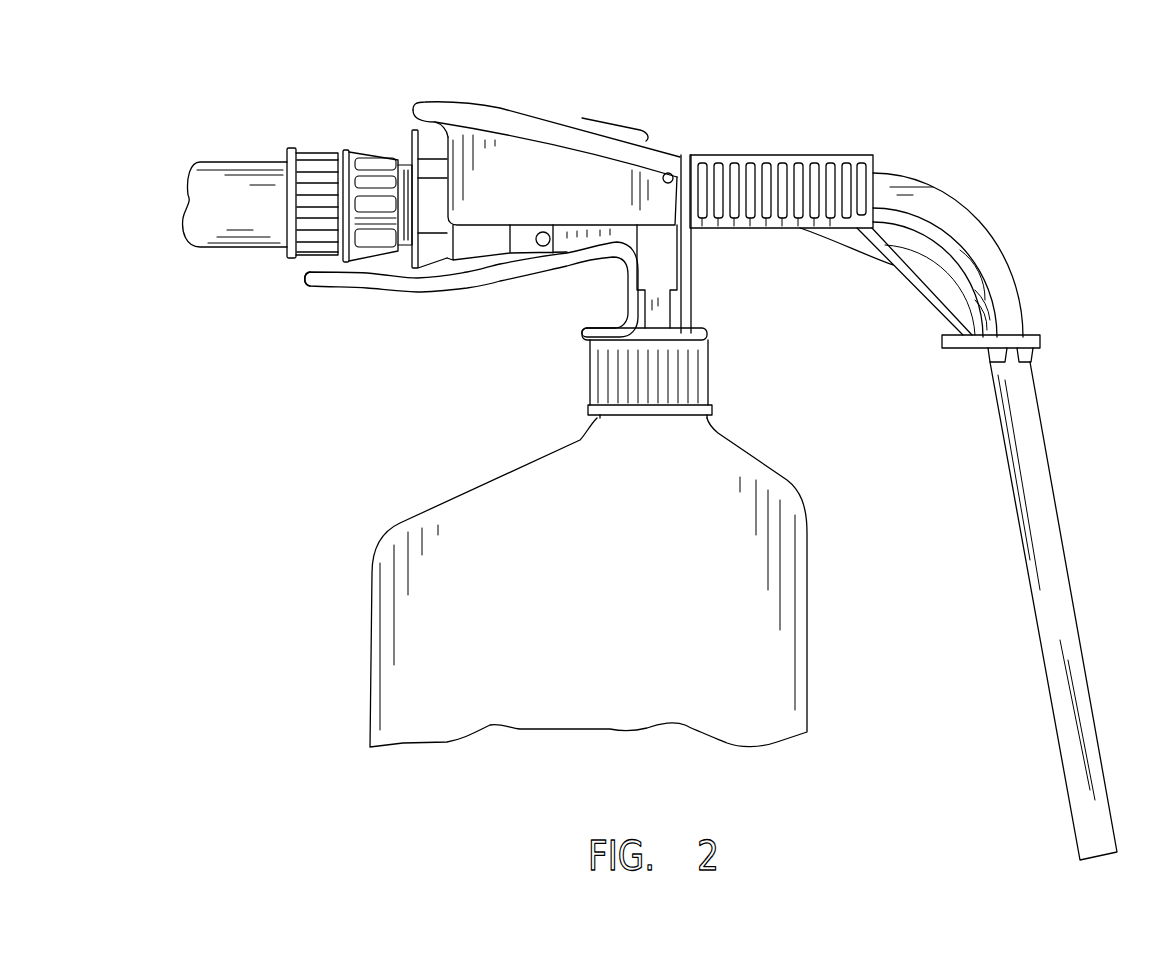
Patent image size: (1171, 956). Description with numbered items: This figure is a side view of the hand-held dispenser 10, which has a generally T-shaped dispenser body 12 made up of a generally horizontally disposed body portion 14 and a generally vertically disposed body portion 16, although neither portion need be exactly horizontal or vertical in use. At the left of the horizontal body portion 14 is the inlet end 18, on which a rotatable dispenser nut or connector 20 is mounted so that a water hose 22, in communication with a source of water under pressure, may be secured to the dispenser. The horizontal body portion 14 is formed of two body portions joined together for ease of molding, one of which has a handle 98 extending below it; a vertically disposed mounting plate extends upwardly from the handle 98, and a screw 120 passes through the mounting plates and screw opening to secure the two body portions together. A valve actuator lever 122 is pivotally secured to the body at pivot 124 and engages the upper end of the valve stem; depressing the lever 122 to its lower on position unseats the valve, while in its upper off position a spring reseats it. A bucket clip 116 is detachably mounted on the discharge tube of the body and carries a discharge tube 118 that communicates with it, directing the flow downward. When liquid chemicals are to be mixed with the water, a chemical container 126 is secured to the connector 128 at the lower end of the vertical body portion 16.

The hand-held dispenser 10 is at (622, 118).
The dispenser body 12 is at (477, 292).
The horizontally disposed body portion 14 is at (773, 152).
The vertically disposed body portion 16 is at (702, 299).
The inlet end 18 is at (400, 135).
The rotatable dispenser nut or connector 20 is at (367, 233).
The water hose 22 is at (240, 175).
The handle 98 is at (333, 280).
The bucket clip 116 is at (835, 180).
The discharge tube 118 is at (1040, 470).
The screw 120 is at (548, 247).
The valve actuator lever 122 is at (533, 108).
The pivot 124 is at (672, 174).
The chemical container 126 is at (787, 482).
The connector 128 is at (700, 383).